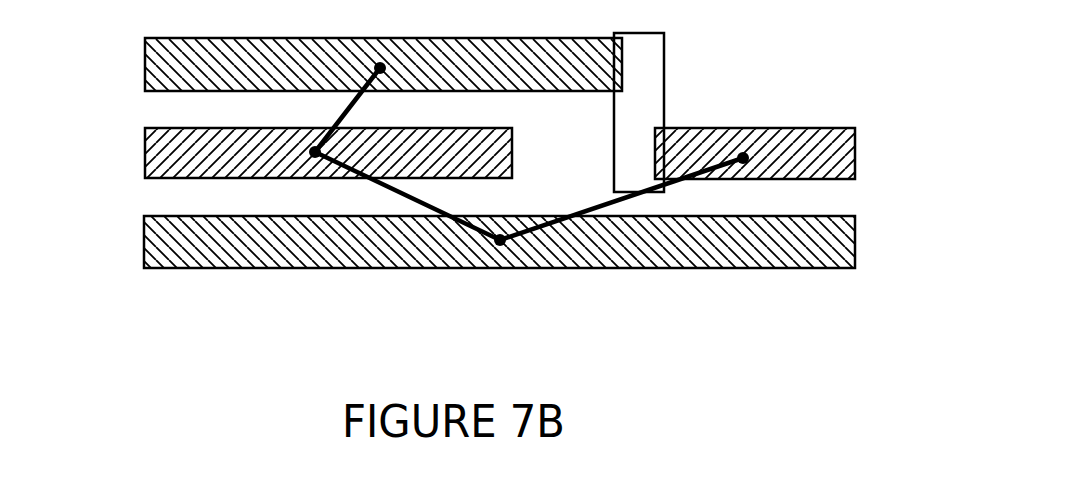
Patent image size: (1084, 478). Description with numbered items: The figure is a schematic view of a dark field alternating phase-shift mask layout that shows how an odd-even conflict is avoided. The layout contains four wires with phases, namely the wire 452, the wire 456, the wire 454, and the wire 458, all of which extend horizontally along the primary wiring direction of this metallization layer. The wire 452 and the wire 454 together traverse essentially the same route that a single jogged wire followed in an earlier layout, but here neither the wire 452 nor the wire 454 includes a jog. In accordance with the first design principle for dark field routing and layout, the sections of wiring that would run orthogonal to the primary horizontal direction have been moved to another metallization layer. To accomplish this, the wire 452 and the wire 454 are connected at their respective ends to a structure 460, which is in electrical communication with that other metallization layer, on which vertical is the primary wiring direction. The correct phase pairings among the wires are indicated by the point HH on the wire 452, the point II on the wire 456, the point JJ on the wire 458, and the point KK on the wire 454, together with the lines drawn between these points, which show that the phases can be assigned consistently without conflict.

The wire 452 is at (145, 62).
The wire 456 is at (145, 147).
The wire 454 is at (842, 143).
The wire 458 is at (145, 238).
The structure 460 is at (642, 87).
The point HH is at (385, 62).
The point II is at (313, 150).
The point JJ is at (500, 242).
The point KK is at (743, 163).